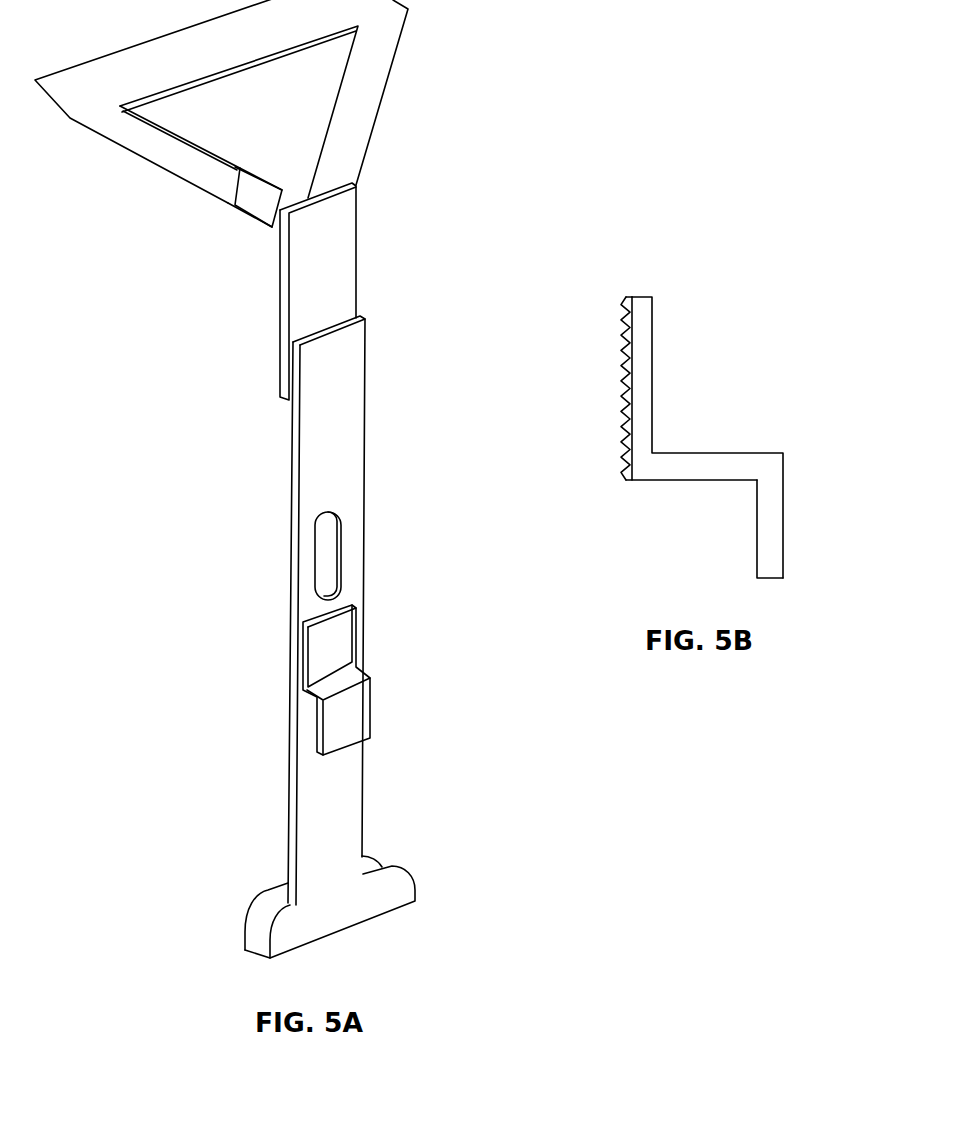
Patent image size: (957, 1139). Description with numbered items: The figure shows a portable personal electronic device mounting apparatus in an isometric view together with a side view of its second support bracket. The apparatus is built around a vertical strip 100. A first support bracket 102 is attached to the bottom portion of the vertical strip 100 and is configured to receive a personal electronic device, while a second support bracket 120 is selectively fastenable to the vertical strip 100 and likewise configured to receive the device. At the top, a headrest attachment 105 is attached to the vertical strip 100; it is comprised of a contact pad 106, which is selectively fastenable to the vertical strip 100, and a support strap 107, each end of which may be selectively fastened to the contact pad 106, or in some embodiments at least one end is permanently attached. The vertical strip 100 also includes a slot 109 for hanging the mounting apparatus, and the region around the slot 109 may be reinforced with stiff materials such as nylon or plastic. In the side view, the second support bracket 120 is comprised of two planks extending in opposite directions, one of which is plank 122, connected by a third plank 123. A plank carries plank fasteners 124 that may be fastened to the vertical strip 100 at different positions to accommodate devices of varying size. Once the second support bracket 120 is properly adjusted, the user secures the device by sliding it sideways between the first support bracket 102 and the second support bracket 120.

In FIG. 5A, the vertical strip 100 is at (357, 460).
In FIG. 5A, the first support bracket 102 is at (397, 892).
In FIG. 5A, the headrest attachment 105 is at (190, 45).
In FIG. 5A, the contact pad 106 is at (340, 267).
In FIG. 5A, the support strap 107 is at (188, 167).
In FIG. 5A, the slot 109 is at (327, 567).
In FIG. 5A, the second support bracket 120 is at (357, 722).
In FIG. 5B, the second support bracket 120 is at (642, 333).
In FIG. 5B, the plank 122 is at (770, 560).
In FIG. 5B, the third plank 123 is at (698, 480).
In FIG. 5B, the plank fasteners 124 is at (626, 362).